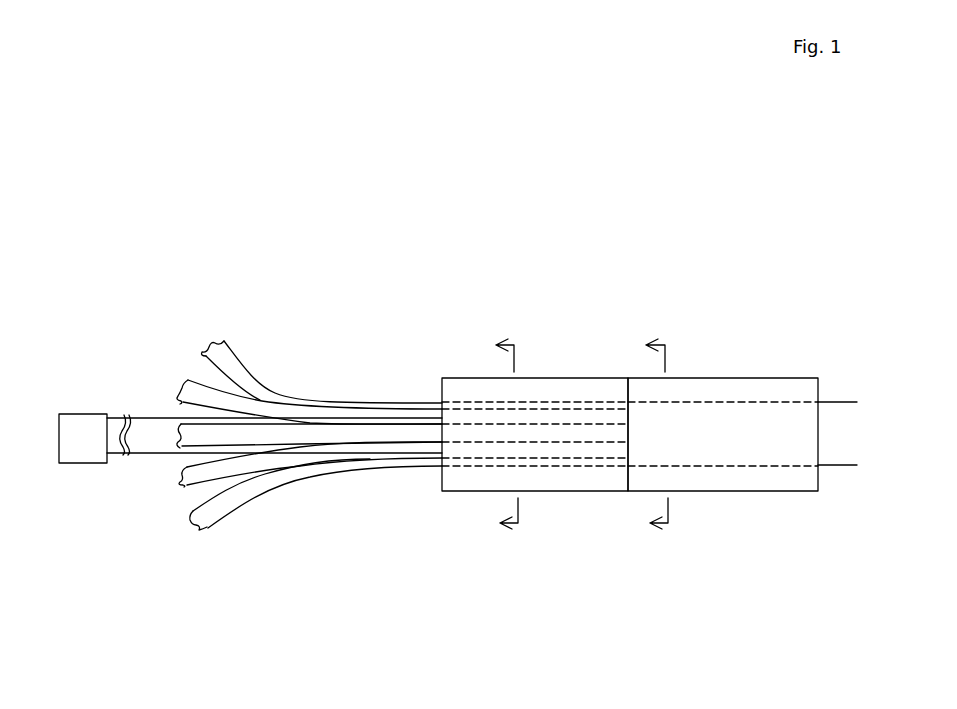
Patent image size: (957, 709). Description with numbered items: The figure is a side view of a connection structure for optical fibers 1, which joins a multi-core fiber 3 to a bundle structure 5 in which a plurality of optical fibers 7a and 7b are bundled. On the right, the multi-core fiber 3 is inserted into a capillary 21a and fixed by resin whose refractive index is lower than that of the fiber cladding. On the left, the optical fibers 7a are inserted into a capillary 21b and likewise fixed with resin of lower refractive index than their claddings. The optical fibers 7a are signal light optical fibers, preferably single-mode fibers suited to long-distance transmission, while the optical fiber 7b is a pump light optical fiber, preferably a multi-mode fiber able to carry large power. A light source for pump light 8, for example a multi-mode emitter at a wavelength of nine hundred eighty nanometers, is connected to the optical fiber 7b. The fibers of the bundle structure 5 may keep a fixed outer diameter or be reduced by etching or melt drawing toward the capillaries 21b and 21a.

The connection structure for optical fibers 1 is at (623, 270).
The multi-core fiber 3 is at (784, 423).
The bundle structure 5 is at (330, 493).
The signal light optical fiber 7a is at (267, 392).
The pump light optical fiber 7b is at (158, 448).
The light source for pump light 8 is at (78, 420).
The capillary 21a is at (758, 482).
The capillary 21b is at (460, 483).